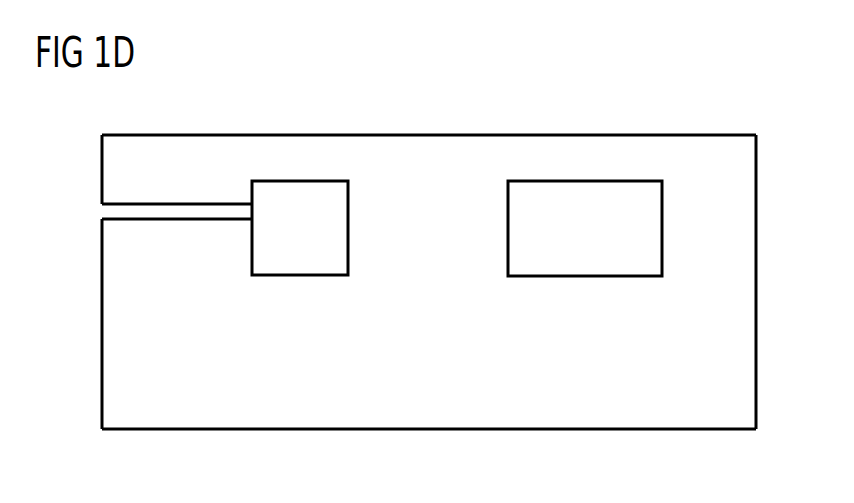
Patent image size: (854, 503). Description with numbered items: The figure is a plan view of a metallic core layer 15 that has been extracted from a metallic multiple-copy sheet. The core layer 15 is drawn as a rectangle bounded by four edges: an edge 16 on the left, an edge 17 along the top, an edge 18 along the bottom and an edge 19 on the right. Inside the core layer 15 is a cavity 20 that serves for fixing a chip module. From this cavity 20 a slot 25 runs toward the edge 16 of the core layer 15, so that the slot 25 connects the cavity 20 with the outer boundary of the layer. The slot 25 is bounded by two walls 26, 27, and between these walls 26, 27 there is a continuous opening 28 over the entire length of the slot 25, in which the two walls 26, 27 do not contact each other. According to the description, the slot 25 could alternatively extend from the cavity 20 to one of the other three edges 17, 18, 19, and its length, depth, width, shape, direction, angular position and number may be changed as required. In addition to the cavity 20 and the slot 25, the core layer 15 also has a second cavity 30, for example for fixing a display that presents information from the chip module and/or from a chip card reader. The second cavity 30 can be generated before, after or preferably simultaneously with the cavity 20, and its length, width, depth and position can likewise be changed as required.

The metallic core layer 15 is at (429, 283).
The edge 16 is at (102, 325).
The edge 17 is at (428, 136).
The edge 18 is at (443, 432).
The edge 19 is at (757, 282).
The cavity 20 is at (347, 226).
The slot 25 is at (177, 214).
The wall 26 is at (142, 203).
The wall 27 is at (142, 220).
The continuous opening 28 is at (102, 212).
The second cavity 30 is at (512, 227).